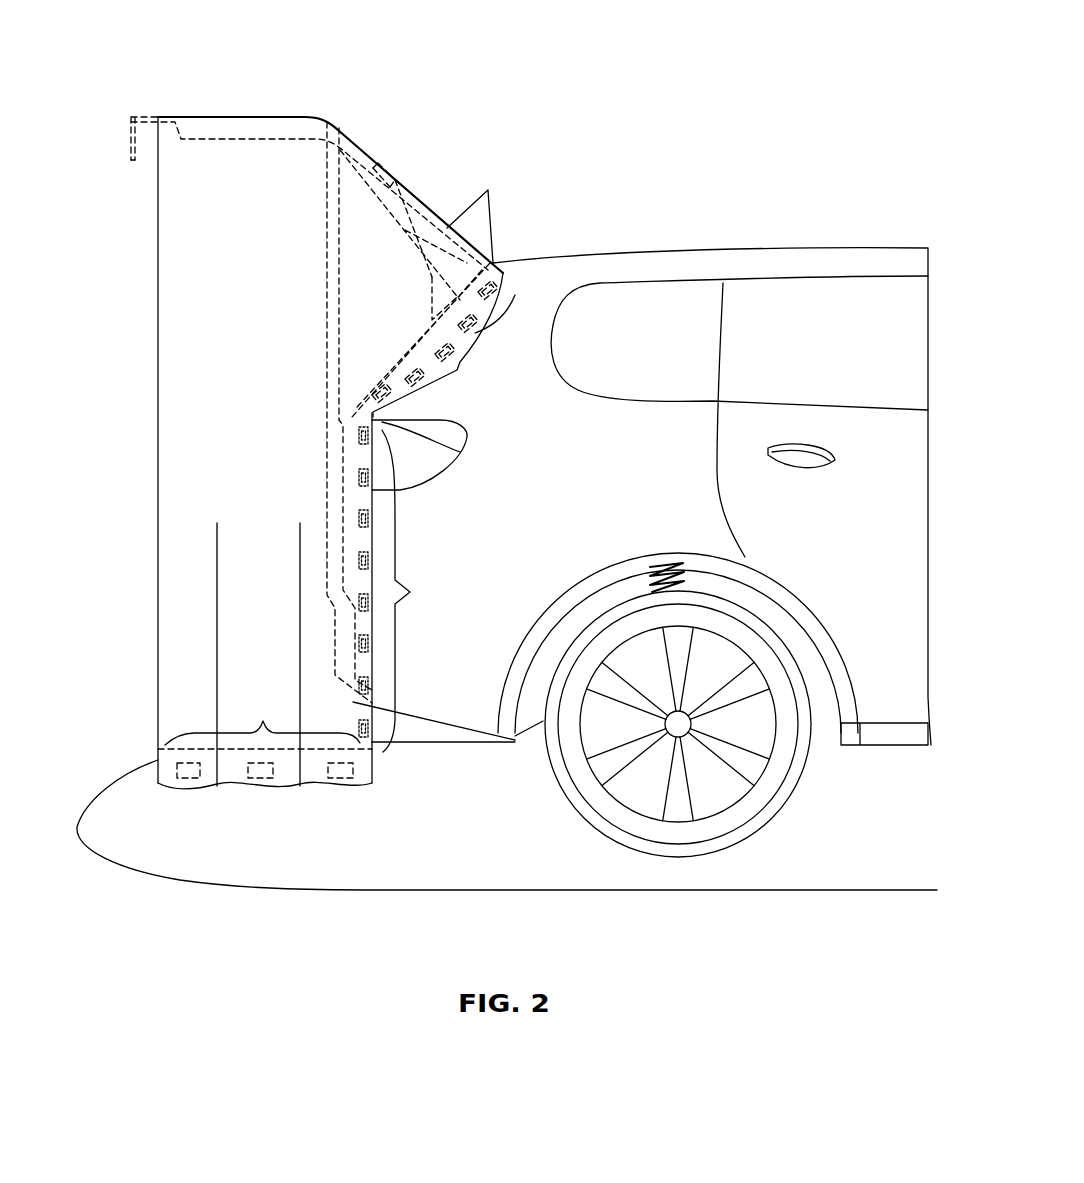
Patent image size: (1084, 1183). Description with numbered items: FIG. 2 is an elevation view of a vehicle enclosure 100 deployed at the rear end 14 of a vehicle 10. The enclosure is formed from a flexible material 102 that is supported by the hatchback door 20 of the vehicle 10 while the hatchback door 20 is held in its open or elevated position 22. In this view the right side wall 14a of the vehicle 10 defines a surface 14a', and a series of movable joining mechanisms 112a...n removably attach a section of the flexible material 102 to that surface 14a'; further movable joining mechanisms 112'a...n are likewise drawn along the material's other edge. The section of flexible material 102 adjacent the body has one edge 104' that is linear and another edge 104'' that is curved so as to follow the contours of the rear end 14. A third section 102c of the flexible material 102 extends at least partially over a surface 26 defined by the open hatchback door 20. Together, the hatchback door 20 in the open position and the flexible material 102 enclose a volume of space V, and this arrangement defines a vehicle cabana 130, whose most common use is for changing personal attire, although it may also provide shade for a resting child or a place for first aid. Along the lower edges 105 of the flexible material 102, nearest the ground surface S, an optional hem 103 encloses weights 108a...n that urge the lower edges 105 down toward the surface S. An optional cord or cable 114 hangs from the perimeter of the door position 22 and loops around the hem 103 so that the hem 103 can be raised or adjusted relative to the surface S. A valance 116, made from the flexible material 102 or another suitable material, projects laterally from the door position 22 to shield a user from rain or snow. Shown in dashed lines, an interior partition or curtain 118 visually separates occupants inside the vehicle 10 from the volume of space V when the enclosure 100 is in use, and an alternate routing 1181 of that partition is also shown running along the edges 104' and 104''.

The vehicle 10 is at (615, 211).
The rear end of the vehicle 14 is at (520, 165).
The right side wall 14a is at (525, 279).
The surface of the right side wall 14a' is at (457, 586).
The hatchback door 20 is at (363, 147).
The position of the hatchback door 22 is at (174, 112).
The surface defined by the hatchback door 26 is at (253, 116).
The vehicle enclosure 100 is at (150, 52).
The flexible material 102 is at (168, 388).
The third section 102c is at (312, 117).
The hem 103 is at (233, 772).
The linear edge 104' is at (433, 582).
The curved edge 104'' is at (457, 349).
The lower edges 105 is at (337, 783).
The weights 108a...n is at (262, 717).
The movable joining mechanisms 112a...n is at (457, 349).
The openings 112'a...n is at (433, 582).
The cord or cable 114 is at (158, 598).
The valance 116 is at (128, 141).
The interior partition or curtain 118 is at (338, 237).
The alternate routing of the interior partition 1181 is at (432, 320).
The vehicle cabana 130 is at (166, 310).
The surface S is at (134, 790).
The volume of space V is at (165, 260).